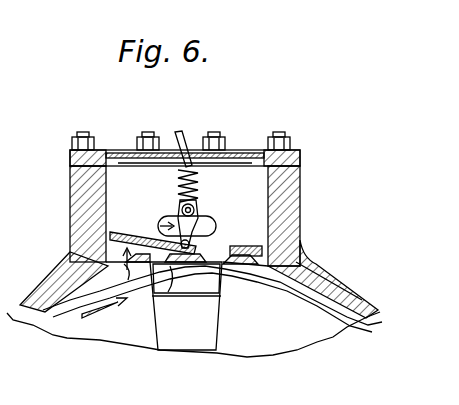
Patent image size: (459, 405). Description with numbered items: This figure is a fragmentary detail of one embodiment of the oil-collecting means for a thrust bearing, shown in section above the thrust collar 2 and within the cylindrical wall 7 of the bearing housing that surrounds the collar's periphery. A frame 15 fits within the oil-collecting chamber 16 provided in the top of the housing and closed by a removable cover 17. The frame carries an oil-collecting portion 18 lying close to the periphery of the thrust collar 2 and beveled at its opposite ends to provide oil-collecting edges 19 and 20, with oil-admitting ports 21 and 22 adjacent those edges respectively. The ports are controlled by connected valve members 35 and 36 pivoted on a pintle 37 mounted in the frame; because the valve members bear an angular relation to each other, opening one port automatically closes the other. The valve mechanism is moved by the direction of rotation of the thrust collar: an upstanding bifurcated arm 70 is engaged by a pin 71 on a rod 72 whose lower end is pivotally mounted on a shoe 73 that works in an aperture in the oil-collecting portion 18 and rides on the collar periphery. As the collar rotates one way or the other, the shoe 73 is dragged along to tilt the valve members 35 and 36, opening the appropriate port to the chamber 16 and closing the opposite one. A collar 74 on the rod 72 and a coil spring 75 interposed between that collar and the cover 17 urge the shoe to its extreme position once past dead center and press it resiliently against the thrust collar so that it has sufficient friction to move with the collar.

The thrust collar 2 is at (58, 310).
The cylindrical wall 7 is at (318, 266).
The frame 15 is at (92, 252).
The oil-collecting chamber 16 is at (282, 188).
The cover 17 is at (292, 149).
The oil-collecting portion 18 is at (149, 266).
The oil-collecting edge 19 is at (128, 280).
The oil-collecting edge 20 is at (252, 268).
The oil-admitting port 21 is at (118, 266).
The oil-admitting port 22 is at (318, 274).
The valve member 35 is at (124, 237).
The valve member 36 is at (246, 246).
The pintle 37 is at (170, 292).
The bifurcated arm 70 is at (198, 212).
The pin 71 is at (186, 210).
The rod 72 is at (216, 226).
The shoe 73 is at (206, 268).
The collar 74 is at (200, 160).
The coil spring 75 is at (176, 184).